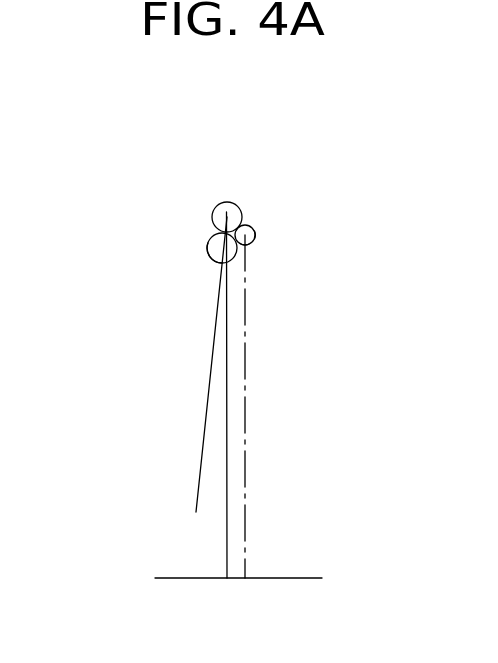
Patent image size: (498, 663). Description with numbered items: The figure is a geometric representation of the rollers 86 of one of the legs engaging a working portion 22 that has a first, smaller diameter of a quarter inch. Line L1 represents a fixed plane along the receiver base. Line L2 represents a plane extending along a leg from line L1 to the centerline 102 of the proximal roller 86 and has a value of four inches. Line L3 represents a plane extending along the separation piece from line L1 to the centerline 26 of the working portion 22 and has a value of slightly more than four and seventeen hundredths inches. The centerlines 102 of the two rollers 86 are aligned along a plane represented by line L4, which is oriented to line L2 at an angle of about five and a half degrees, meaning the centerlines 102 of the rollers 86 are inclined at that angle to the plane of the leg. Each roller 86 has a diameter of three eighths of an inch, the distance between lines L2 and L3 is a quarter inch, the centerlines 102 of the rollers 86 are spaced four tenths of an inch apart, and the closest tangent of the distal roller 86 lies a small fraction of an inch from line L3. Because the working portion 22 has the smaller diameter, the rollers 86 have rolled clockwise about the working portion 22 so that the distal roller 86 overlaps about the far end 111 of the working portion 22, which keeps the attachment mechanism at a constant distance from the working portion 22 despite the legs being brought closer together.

The rollers 86 is at (227, 202).
The centerline of the roller 102 is at (208, 243).
The far end of the working portion 111 is at (249, 226).
The working portion 22 is at (254, 231).
The centerline of the working portion 26 is at (249, 244).
The line L1 is at (293, 578).
The line L2 is at (226, 517).
The line L3 is at (245, 407).
The line L4 is at (208, 390).